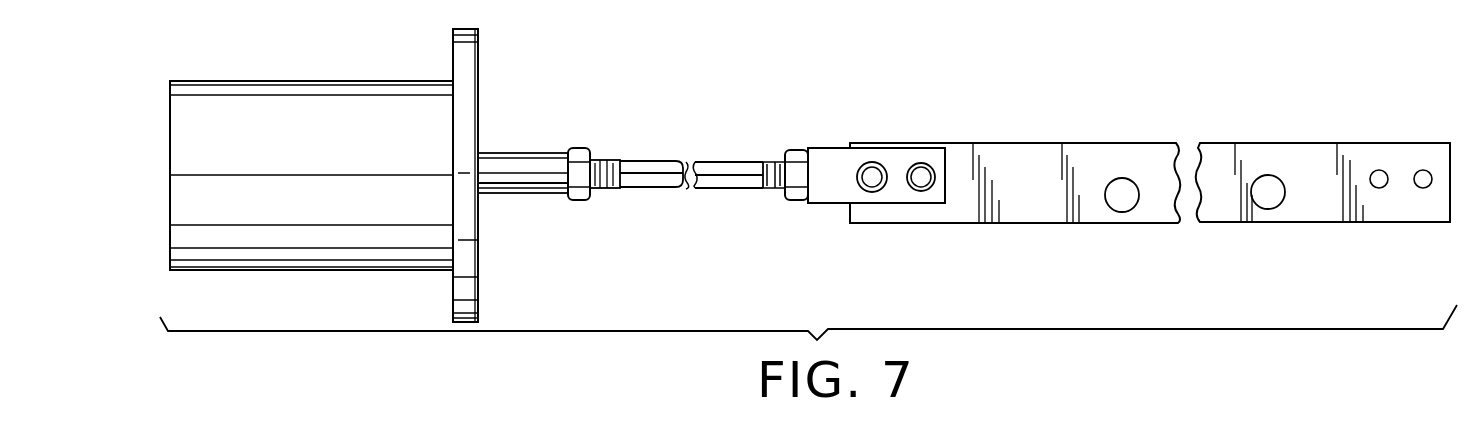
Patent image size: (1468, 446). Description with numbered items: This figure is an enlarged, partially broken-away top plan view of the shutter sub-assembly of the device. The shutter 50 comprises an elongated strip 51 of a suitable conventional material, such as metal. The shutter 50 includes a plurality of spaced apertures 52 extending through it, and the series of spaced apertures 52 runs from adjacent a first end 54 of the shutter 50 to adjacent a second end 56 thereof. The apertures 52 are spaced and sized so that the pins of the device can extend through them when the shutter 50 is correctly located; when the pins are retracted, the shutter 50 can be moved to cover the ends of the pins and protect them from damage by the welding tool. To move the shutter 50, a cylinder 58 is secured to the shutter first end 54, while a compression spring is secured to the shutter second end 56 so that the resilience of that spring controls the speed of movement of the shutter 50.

The shutter 50 is at (1150, 184).
The elongated strip 51 is at (1040, 208).
The spaced apertures 52 is at (1107, 188).
The first end 54 is at (880, 148).
The second end 56 is at (1368, 142).
The cylinder 58 is at (285, 98).